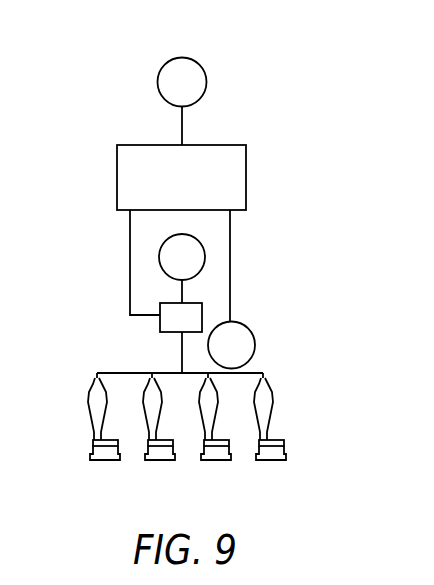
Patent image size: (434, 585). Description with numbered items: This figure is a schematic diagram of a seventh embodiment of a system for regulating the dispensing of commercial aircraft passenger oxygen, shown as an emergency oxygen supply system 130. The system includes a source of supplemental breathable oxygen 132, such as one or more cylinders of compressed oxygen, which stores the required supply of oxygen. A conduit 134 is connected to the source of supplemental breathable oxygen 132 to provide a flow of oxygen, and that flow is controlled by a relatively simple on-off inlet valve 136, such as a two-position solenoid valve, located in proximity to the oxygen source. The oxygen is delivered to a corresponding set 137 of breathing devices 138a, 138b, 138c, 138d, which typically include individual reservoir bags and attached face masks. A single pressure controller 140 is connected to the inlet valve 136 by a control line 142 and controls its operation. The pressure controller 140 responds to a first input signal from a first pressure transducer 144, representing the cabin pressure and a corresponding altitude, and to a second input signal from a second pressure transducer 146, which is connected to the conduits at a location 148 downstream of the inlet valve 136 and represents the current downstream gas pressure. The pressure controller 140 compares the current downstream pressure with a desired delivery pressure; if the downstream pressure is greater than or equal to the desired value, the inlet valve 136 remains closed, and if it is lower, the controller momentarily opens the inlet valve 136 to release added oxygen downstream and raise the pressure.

The emergency oxygen supply system 130 is at (228, 115).
The first pressure transducer 144 is at (157, 80).
The pressure controller 140 is at (168, 146).
The control line 142 is at (129, 220).
The source of supplemental breathable oxygen 132 is at (160, 258).
The conduit 134 is at (182, 290).
The inlet valve 136 is at (160, 326).
The location downstream of the inlet valve 148 is at (182, 347).
The second pressure transducer 146 is at (242, 323).
The set of breathing devices 137 is at (278, 393).
The breathing device 138a is at (92, 419).
The breathing device 138b is at (162, 460).
The breathing device 138c is at (217, 460).
The breathing device 138d is at (272, 406).